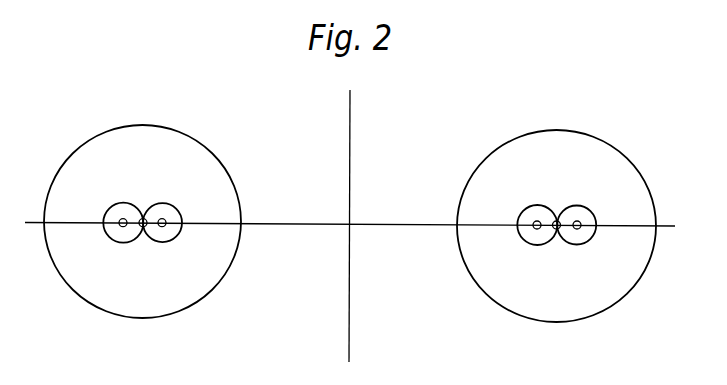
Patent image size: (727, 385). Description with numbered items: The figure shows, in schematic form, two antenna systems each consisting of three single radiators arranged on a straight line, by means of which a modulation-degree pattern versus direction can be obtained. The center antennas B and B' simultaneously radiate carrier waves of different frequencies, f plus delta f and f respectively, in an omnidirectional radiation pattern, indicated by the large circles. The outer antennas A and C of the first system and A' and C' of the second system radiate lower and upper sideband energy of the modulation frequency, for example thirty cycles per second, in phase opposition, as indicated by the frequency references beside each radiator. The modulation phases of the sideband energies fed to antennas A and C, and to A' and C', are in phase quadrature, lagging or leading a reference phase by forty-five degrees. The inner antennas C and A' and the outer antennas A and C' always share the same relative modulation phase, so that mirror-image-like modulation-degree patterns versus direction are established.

The outer antenna A is at (106, 277).
The center antenna B is at (161, 178).
The inner antenna C is at (233, 271).
The inner antenna A' is at (484, 275).
The center antenna B' is at (561, 172).
The outer antenna C' is at (607, 281).